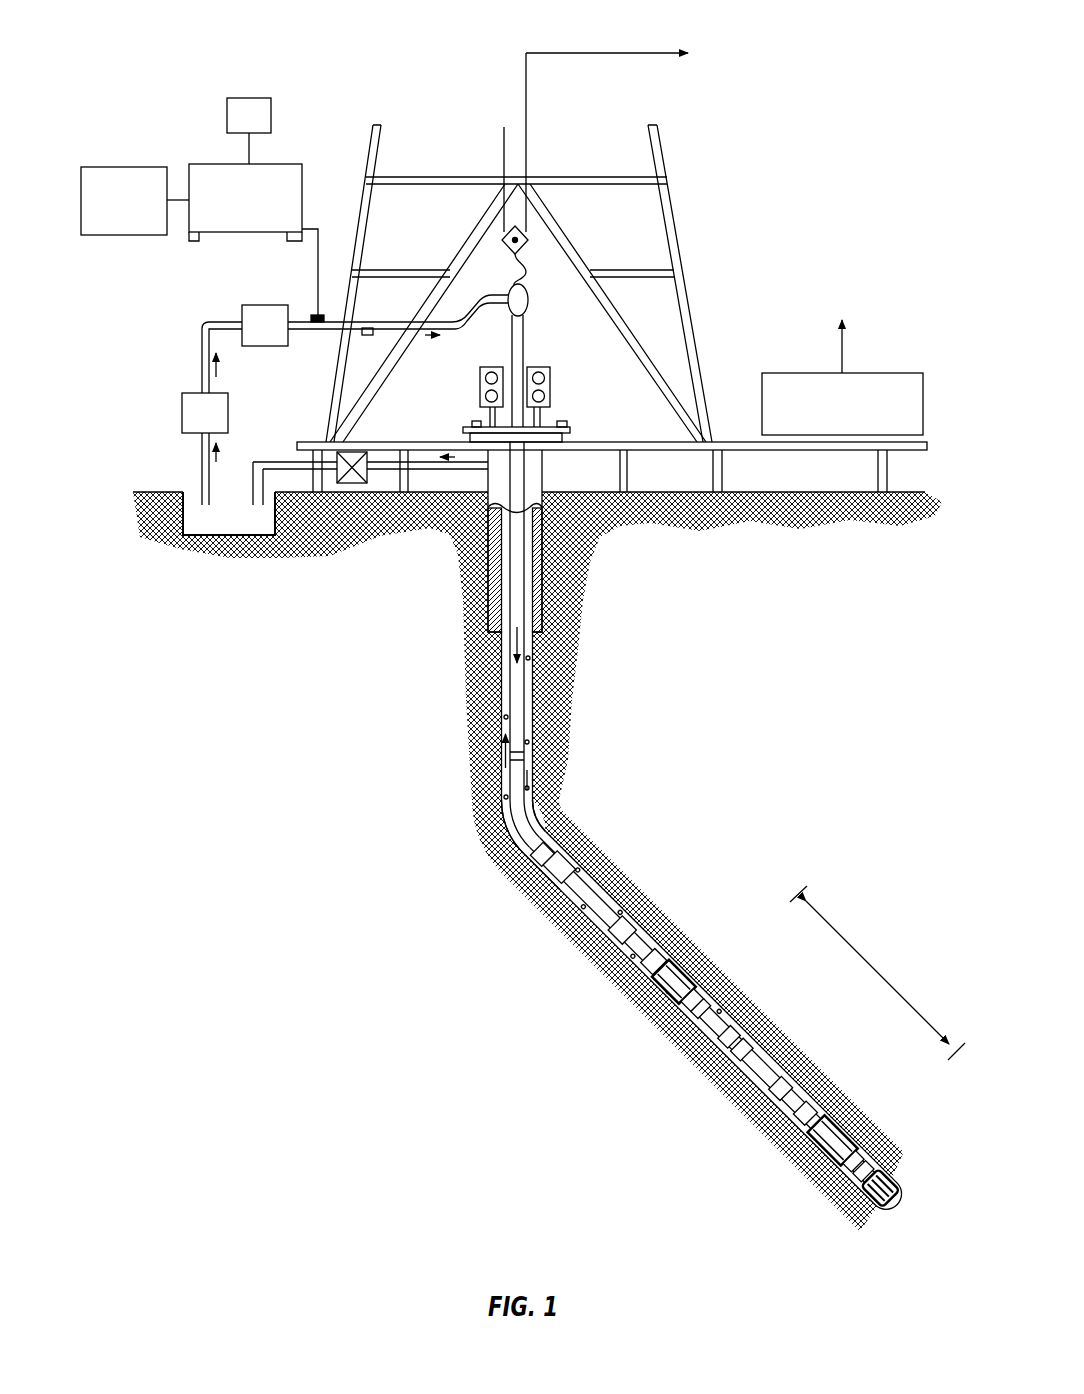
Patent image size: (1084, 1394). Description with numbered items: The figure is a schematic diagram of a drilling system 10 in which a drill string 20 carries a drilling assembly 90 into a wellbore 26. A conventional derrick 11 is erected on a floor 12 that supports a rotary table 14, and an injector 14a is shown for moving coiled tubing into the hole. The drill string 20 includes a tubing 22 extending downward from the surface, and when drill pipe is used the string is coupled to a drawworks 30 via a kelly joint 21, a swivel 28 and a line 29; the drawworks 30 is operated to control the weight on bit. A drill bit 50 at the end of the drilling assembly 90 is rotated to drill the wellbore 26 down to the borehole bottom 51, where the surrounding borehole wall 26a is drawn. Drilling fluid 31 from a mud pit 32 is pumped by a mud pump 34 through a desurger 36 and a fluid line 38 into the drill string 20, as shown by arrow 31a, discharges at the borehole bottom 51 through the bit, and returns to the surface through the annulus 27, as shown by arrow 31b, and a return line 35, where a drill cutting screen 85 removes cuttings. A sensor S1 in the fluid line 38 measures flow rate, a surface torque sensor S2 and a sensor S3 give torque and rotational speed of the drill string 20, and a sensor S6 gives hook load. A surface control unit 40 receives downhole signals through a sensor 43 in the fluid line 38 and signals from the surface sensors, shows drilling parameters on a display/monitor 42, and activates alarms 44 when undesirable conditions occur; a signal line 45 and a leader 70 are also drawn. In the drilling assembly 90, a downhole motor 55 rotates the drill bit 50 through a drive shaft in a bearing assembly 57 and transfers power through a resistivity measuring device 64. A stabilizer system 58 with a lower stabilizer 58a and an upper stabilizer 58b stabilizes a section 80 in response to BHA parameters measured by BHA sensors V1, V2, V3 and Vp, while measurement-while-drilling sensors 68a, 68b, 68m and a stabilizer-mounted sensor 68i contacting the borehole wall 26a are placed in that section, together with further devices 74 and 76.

The drilling system 10 is at (432, 78).
The derrick 11 is at (690, 270).
The floor 12 is at (718, 440).
The rotary table 14 is at (550, 425).
The injector 14a is at (480, 388).
The drill string 20 is at (535, 727).
The kelly joint 21 is at (525, 350).
The tubing 22 is at (510, 710).
The wellbore 26 is at (539, 820).
The borehole wall 26a is at (533, 780).
The annulus 27 is at (558, 853).
The swivel 28 is at (517, 303).
The line 29 is at (527, 153).
The drawworks 30 is at (900, 373).
The drilling fluid 31 is at (192, 510).
The arrow 31a is at (515, 647).
The arrow 31b is at (500, 750).
The mud pit 32 is at (255, 530).
The mud pump 34 is at (200, 402).
The return line 35 is at (415, 470).
The desurger 36 is at (242, 307).
The fluid line 38 is at (320, 330).
The surface control unit 40 is at (213, 163).
The display/monitor 42 is at (253, 98).
The sensor 43 is at (322, 314).
The alarms 44 is at (145, 237).
The signal line 45 is at (313, 226).
The drill bit 50 is at (915, 1170).
The borehole bottom 51 is at (845, 1237).
The downhole motor 55 is at (619, 930).
The bearing assembly 57 is at (810, 1157).
The stabilizer system 58 is at (640, 1080).
The lower stabilizer 58a is at (833, 1132).
The upper stabilizer 58b is at (671, 960).
The resistivity measuring device 64 is at (763, 1068).
The sensor 68a is at (690, 998).
The sensor 68b is at (737, 1027).
The sensor 68i is at (688, 968).
The sensor 68m is at (770, 1095).
The wellbore wall 70 is at (523, 863).
The sensor 74 is at (760, 1040).
The sensor 76 is at (810, 1102).
The section 80 is at (877, 973).
The drill cutting screen 85 is at (353, 452).
The drilling assembly 90 is at (687, 841).
The sensor S1 is at (373, 325).
The surface torque sensor S2 is at (567, 425).
The sensor S3 is at (472, 422).
The sensor S6 is at (528, 287).
The BHA sensor V1 is at (688, 1010).
The BHA sensor V2 is at (747, 1050).
The BHA sensor V3 is at (783, 1110).
The BHA sensor Vp is at (817, 1112).